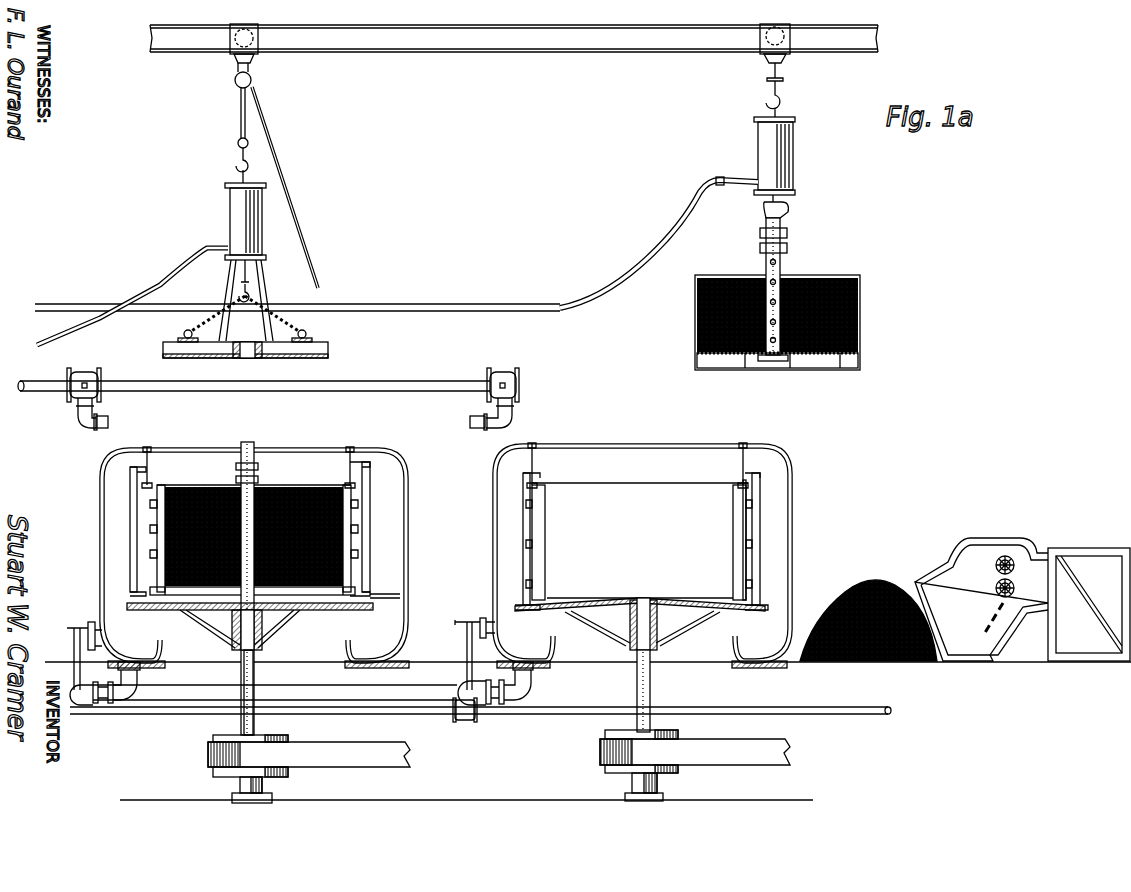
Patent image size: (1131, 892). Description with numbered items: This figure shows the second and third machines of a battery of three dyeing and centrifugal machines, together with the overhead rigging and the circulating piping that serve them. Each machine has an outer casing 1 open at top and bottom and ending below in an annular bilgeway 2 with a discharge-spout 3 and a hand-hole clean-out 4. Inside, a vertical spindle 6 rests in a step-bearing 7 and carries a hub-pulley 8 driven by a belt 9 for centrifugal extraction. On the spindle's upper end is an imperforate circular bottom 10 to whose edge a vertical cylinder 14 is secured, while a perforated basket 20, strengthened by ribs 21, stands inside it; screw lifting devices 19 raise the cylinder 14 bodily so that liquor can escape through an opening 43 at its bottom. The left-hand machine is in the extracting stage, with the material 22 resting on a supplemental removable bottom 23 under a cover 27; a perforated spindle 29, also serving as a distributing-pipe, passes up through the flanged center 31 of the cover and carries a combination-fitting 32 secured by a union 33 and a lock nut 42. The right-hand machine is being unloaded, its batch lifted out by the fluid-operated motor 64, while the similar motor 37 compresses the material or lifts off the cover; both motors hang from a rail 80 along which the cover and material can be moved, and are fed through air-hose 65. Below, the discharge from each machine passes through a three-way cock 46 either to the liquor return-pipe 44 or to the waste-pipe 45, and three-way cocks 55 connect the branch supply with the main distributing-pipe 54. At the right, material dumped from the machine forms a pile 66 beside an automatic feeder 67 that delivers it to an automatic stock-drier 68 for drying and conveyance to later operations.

The outer casing 1 is at (404, 571).
The bilgeway 2 is at (758, 649).
The discharge-spout 3 is at (137, 704).
The hand-hole clean-out 4 is at (467, 645).
The vertical spindle 6 is at (257, 675).
The step-bearing 7 is at (265, 788).
The hub-pulley 8 is at (287, 741).
The belt 9 is at (499, 753).
The imperforate circular bottom 10 is at (337, 604).
The vertical cylinder 14 is at (371, 538).
The screw lifting device 19 is at (145, 479).
The perforated inner cylinder 20 is at (350, 501).
The ribs 21 is at (758, 553).
The material 22 is at (862, 294).
The supplemental removable bottom 23 is at (825, 357).
The cover 27 is at (332, 349).
The spindle 29 is at (253, 446).
The flanged center 31 is at (264, 494).
The combination-fitting 32 is at (85, 421).
The union 33 is at (108, 422).
The fluid-operated motor 37 is at (240, 226).
The lock nut 42 is at (259, 471).
The opening 43 is at (400, 596).
The liquor return-pipe 44 is at (178, 696).
The waste-pipe 45 is at (480, 698).
The three-way cock 46 is at (460, 686).
The main distributing-pipe 54 is at (367, 390).
The three-way cock 55 is at (87, 378).
The fluid-operated motor 64 is at (783, 156).
The air-hose 65 is at (149, 290).
The pile of material 66 is at (880, 580).
The automatic feeder 67 is at (981, 599).
The automatic stock-drier 68 is at (1089, 604).
The rail 80 is at (397, 40).